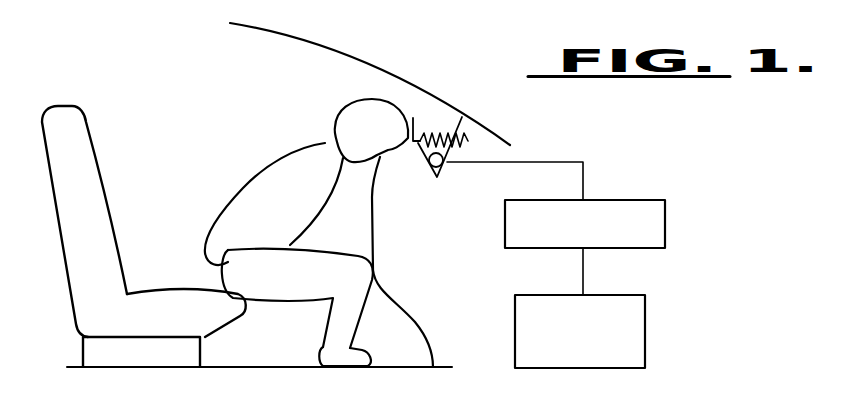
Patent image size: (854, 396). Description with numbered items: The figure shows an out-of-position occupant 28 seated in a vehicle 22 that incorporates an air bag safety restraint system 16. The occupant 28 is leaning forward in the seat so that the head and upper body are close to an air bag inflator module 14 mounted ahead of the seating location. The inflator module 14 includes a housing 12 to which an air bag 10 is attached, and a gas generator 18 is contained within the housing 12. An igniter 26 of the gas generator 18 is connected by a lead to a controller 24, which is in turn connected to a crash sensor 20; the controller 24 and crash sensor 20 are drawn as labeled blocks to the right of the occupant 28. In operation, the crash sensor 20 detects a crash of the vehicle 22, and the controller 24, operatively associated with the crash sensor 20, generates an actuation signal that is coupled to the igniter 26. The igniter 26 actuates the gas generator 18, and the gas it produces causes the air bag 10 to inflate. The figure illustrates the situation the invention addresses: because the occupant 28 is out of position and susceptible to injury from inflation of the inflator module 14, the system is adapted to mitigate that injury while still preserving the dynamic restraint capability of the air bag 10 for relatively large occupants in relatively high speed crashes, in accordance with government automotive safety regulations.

The air bag 10 is at (469, 146).
The housing 12 is at (470, 145).
The air bag inflator module 14 is at (406, 159).
The air bag safety restraint system 16 is at (558, 142).
The gas generator 18 is at (431, 177).
The crash sensor 20 is at (637, 305).
The vehicle 22 is at (438, 78).
The controller 24 is at (653, 203).
The igniter 26 is at (448, 173).
The occupant 28 is at (258, 170).